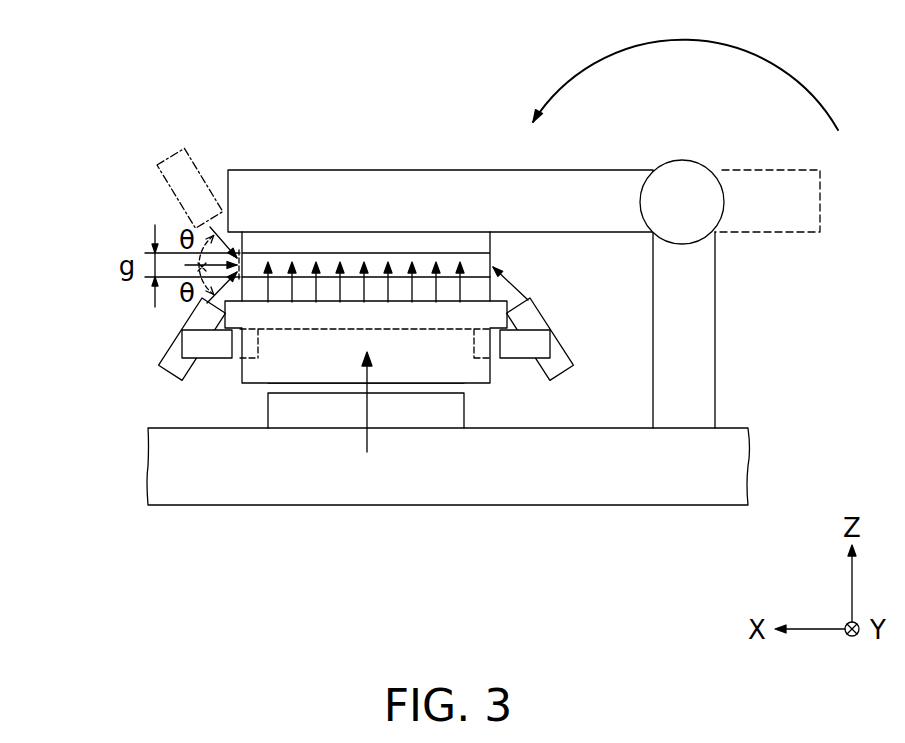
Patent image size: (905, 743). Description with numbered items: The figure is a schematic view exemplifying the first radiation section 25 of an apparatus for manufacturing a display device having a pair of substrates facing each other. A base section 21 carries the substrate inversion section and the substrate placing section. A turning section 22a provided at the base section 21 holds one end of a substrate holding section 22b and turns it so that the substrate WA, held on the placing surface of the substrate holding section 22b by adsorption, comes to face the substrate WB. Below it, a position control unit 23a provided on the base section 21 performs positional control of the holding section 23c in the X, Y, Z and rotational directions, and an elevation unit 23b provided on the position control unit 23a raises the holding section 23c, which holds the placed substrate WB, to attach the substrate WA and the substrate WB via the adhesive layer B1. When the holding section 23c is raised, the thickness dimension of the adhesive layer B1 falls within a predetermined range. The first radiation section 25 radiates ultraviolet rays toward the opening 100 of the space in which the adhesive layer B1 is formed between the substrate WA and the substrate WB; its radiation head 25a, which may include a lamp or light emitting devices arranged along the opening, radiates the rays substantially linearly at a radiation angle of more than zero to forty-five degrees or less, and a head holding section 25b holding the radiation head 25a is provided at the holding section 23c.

The opening 100 is at (237, 250).
The base section 21 is at (207, 472).
The turning section 22a is at (688, 180).
The substrate holding section 22b is at (611, 196).
The position control unit 23a is at (405, 410).
The elevation unit 23b is at (332, 388).
The holding section 23c is at (315, 330).
The first radiation section 25 is at (438, 385).
The radiation head 25a is at (173, 180).
The head holding section 25b is at (207, 345).
The adhesive layer B1 is at (350, 263).
The substrate WA is at (412, 240).
The substrate WB is at (473, 288).